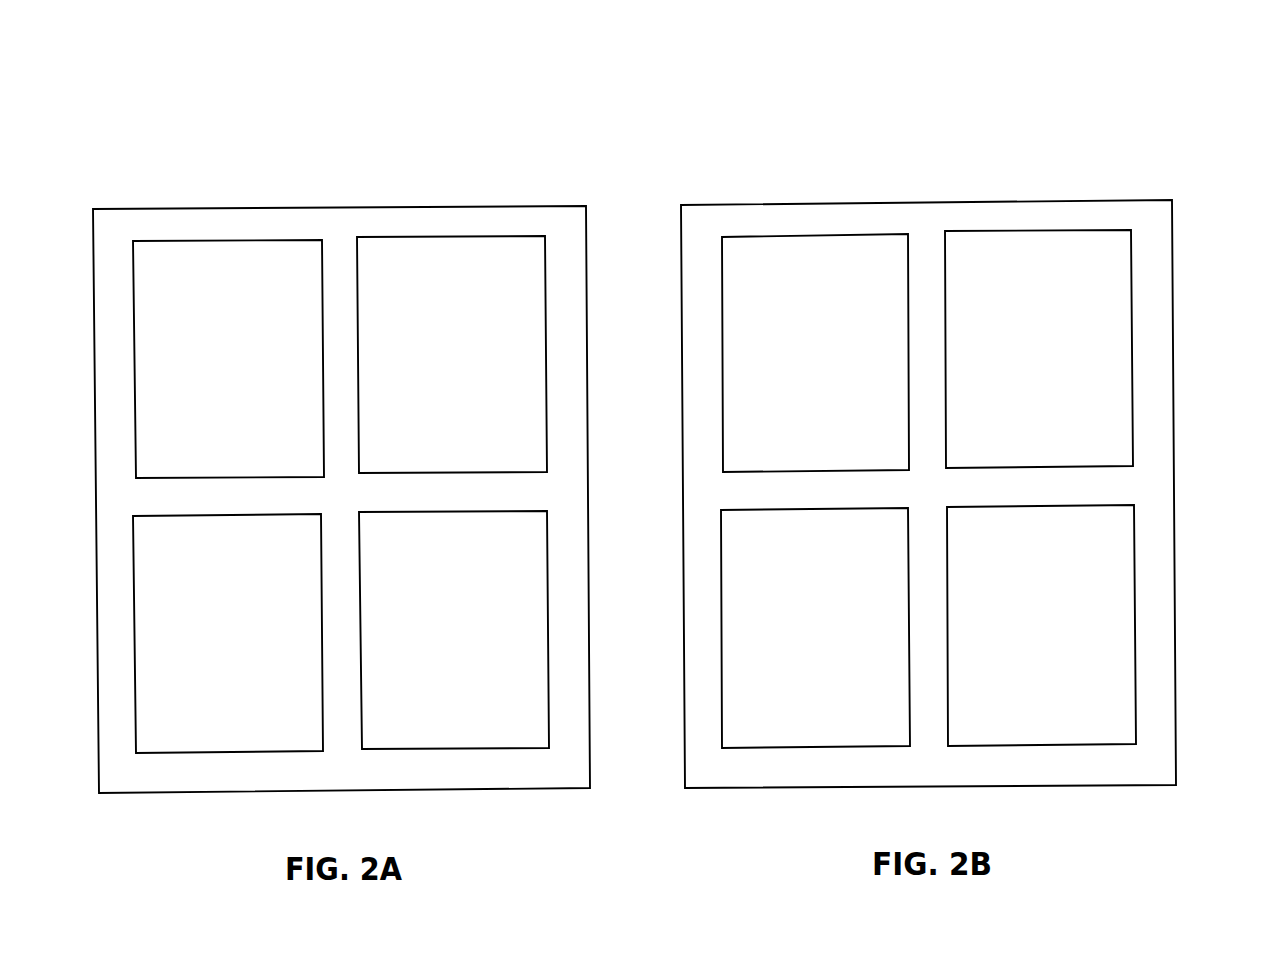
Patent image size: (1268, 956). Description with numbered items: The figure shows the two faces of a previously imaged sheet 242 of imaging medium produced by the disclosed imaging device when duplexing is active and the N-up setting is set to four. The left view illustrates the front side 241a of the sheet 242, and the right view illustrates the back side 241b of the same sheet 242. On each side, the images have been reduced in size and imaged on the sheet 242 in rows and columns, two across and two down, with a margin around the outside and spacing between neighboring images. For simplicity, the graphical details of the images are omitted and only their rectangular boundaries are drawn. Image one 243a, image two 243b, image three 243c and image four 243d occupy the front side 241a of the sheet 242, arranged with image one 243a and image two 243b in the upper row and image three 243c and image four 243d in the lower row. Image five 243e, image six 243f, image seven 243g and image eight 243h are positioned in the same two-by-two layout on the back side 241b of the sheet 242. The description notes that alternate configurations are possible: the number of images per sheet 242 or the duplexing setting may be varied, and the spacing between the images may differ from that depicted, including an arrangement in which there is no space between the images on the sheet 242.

In FIG. 2A, the sheet 242 is at (128, 103).
In FIG. 2B, the sheet 242 is at (813, 80).
In FIG. 2A, the front side 241a is at (399, 228).
In FIG. 2B, the back side 241b is at (881, 217).
In FIG. 2A, the image 1 243a is at (150, 354).
In FIG. 2A, the image 2 243b is at (513, 404).
In FIG. 2A, the image 3 243c is at (155, 605).
In FIG. 2A, the image 4 243d is at (525, 670).
In FIG. 2B, the image 5 243e is at (738, 337).
In FIG. 2B, the image 6 243f is at (1107, 325).
In FIG. 2B, the image 7 243g is at (740, 570).
In FIG. 2B, the image 8 243h is at (1112, 555).